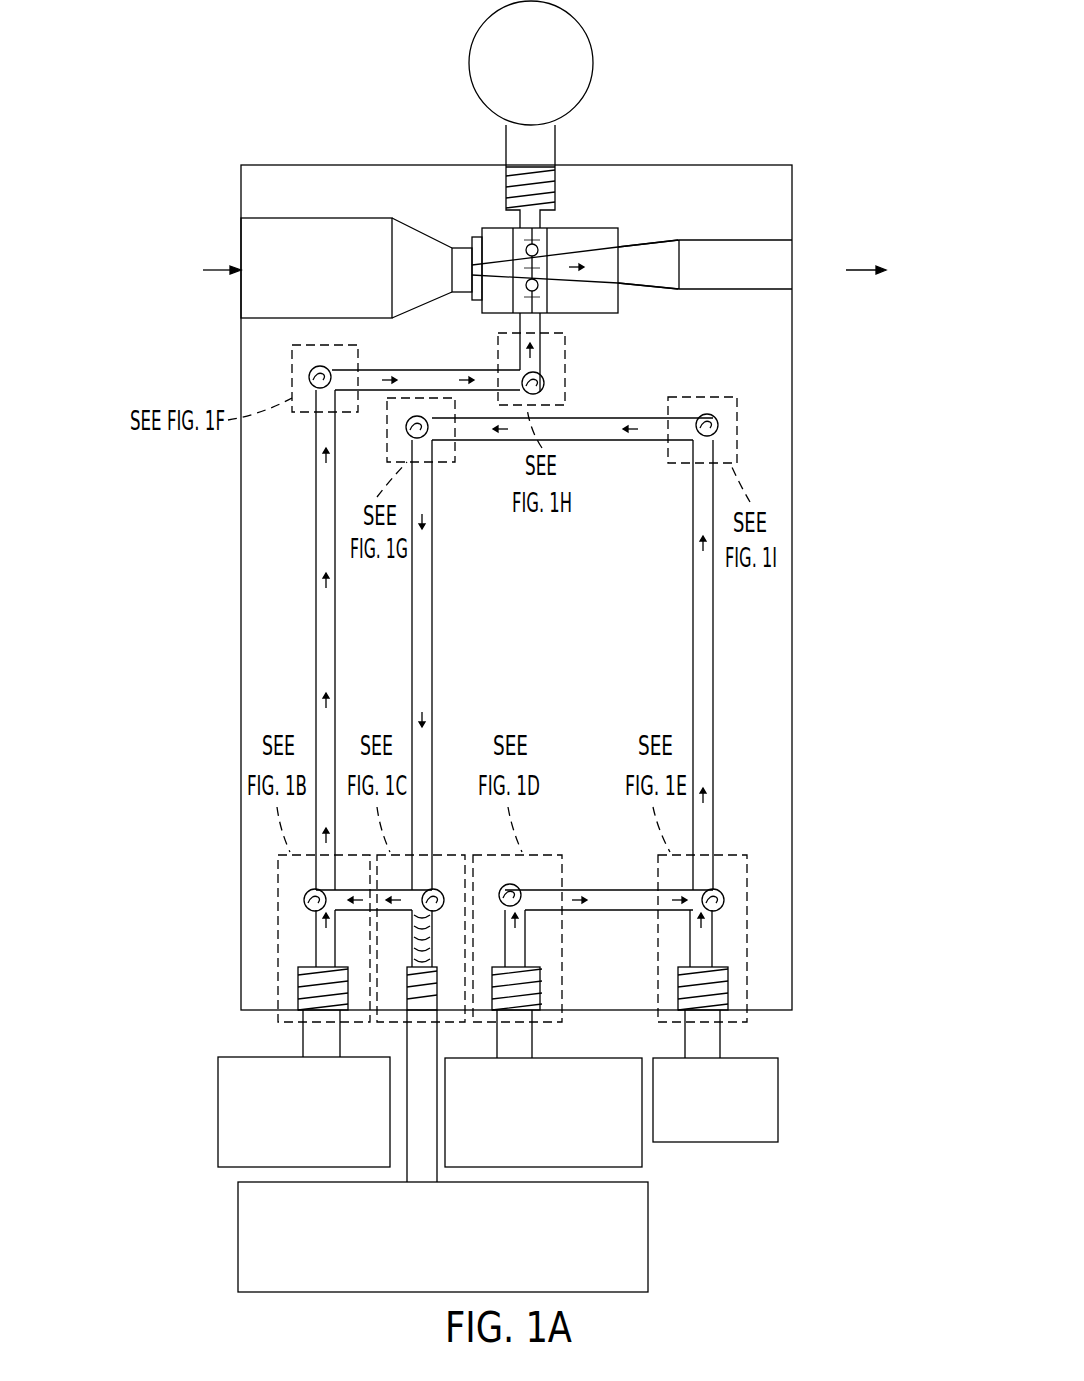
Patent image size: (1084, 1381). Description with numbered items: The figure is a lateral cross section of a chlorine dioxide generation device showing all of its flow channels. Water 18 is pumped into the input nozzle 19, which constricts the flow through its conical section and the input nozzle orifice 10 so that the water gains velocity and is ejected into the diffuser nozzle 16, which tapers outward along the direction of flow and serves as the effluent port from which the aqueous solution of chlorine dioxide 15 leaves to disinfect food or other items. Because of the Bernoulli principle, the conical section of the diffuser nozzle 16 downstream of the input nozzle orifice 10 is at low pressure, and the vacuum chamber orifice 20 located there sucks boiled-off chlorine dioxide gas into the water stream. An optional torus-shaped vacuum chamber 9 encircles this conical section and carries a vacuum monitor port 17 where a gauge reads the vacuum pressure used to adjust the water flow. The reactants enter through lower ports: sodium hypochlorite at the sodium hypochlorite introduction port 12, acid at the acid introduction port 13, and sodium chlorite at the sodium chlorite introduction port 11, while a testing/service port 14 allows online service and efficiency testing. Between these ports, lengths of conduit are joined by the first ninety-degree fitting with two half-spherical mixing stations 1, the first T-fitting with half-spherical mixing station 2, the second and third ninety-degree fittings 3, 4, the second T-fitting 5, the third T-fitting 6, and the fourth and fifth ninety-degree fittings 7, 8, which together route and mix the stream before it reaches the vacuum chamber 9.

The first ninety-degree fitting/conduit with two half-spherical mixing stations 1 is at (500, 885).
The first T-fitting/conduit with half-spherical mixing station 2 is at (718, 882).
The second ninety-degree fitting/conduit with two half-spherical mixing stations 3 is at (703, 415).
The third ninety-degree fitting/conduit with two half-spherical mixing stations 4 is at (408, 425).
The second T-fitting/conduit with half-spherical mixing station 5 is at (437, 890).
The third T-fitting/conduit with half-spherical mixing station 6 is at (314, 892).
The fourth ninety-degree fitting/conduit with two half-spherical mixing stations 7 is at (312, 368).
The fifth ninety-degree fitting/conduit with two half-spherical mixing stations 8 is at (545, 385).
The vacuum chamber 9 is at (545, 315).
The input nozzle orifice 10 is at (472, 257).
The sodium chlorite introduction port 11 is at (218, 1112).
The sodium hypochlorite introduction port 12 is at (642, 1153).
The acid introduction port 13 is at (778, 1100).
The testing/service port 14 is at (238, 1242).
The aqueous solution of chlorine dioxide 15 is at (859, 271).
The diffuser nozzle 16 is at (728, 238).
The vacuum monitor port 17 is at (585, 28).
The water 18 is at (147, 250).
The input nozzle 19 is at (318, 217).
The vacuum chamber orifice 20 is at (548, 250).